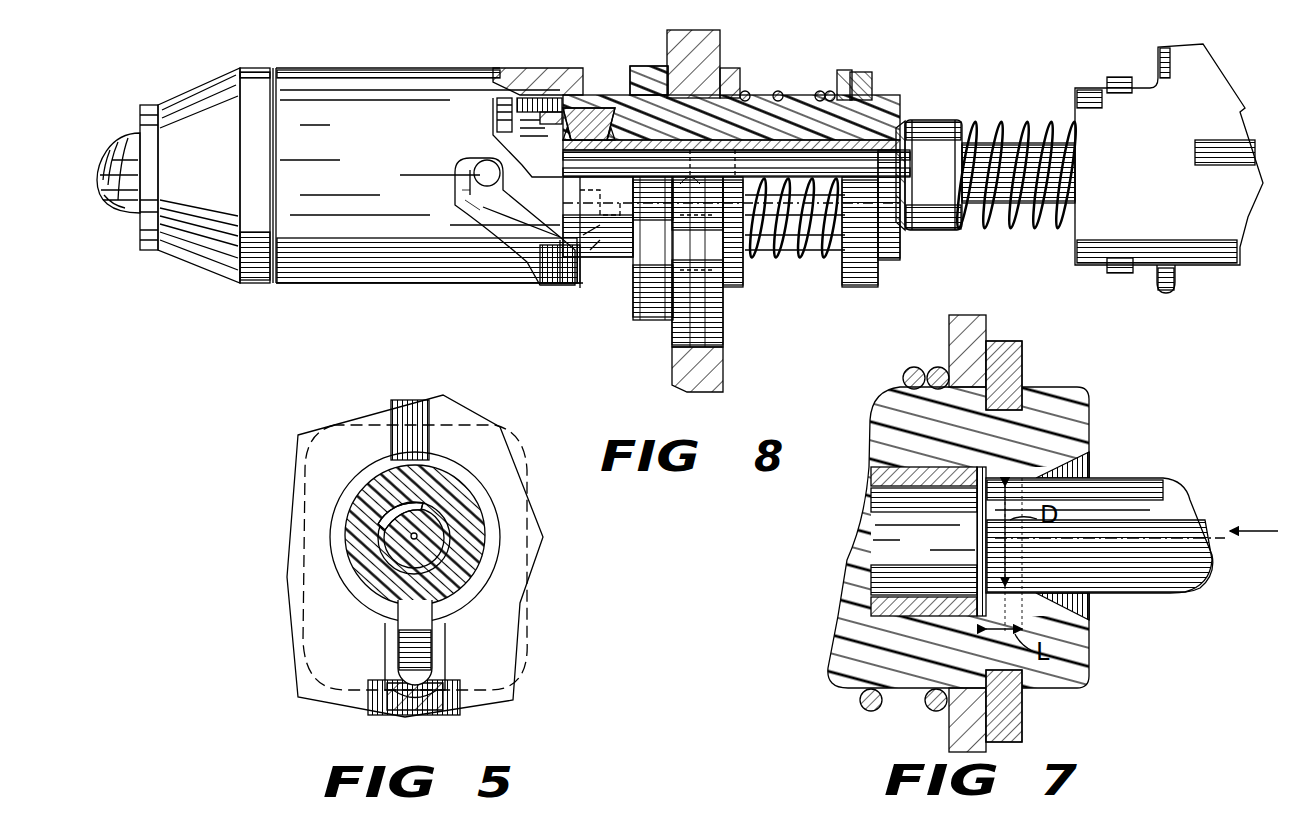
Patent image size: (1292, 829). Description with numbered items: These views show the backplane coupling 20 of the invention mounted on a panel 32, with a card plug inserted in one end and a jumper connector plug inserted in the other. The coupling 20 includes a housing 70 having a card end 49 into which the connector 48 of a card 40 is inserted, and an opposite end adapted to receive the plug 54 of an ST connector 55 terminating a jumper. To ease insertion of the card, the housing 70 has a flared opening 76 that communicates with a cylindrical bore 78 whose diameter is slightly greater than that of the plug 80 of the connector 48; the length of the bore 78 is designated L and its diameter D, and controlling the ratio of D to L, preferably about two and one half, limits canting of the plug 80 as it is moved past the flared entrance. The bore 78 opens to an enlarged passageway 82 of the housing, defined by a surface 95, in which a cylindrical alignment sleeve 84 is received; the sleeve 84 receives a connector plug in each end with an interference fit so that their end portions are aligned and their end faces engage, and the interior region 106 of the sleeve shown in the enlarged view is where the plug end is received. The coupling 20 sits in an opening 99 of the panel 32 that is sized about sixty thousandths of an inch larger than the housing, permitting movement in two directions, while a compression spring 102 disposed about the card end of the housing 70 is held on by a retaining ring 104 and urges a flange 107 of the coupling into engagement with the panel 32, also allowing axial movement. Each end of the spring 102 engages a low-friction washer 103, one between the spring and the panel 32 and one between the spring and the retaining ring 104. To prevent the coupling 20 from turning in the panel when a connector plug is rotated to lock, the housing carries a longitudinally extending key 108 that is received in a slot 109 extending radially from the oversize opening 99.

In FIG. 8, the coupling 20 is at (460, 307).
In FIG. 8, the panel 32 is at (716, 50).
In FIG. 5, the panel 32 is at (484, 433).
In FIG. 8, the card 40 is at (1150, 63).
In FIG. 8, the connector 48 is at (1006, 112).
In FIG. 8, the card end 49 is at (913, 82).
In FIG. 8, the plug 54 is at (567, 172).
In FIG. 8, the ST connector 55 is at (362, 66).
In FIG. 8, the housing 70 is at (786, 249).
In FIG. 5, the housing 70 is at (478, 500).
In FIG. 7, the flared opening 76 is at (1080, 470).
In FIG. 7, the cylindrical bore 78 is at (988, 484).
In FIG. 8, the plug 80 is at (805, 163).
In FIG. 7, the plug 80 is at (1182, 506).
In FIG. 7, the passageway 82 is at (852, 606).
In FIG. 7, the alignment sleeve 84 is at (870, 484).
In FIG. 7, the surface 95 is at (852, 590).
In FIG. 8, the opening 99 is at (680, 87).
In FIG. 5, the opening 99 is at (347, 583).
In FIG. 8, the compression spring 102 is at (779, 94).
In FIG. 7, the compression spring 102 is at (904, 375).
In FIG. 8, the washer 103 is at (742, 74).
In FIG. 7, the washer 103 is at (952, 336).
In FIG. 8, the retaining ring 104 is at (862, 79).
In FIG. 7, the retaining ring 104 is at (1016, 366).
In FIG. 7, the bore 106 is at (882, 546).
In FIG. 8, the flange 107 is at (653, 313).
In FIG. 5, the flange 107 is at (510, 614).
In FIG. 8, the key 108 is at (715, 307).
In FIG. 5, the key 108 is at (423, 667).
In FIG. 8, the slot 109 is at (720, 337).
In FIG. 5, the slot 109 is at (395, 657).